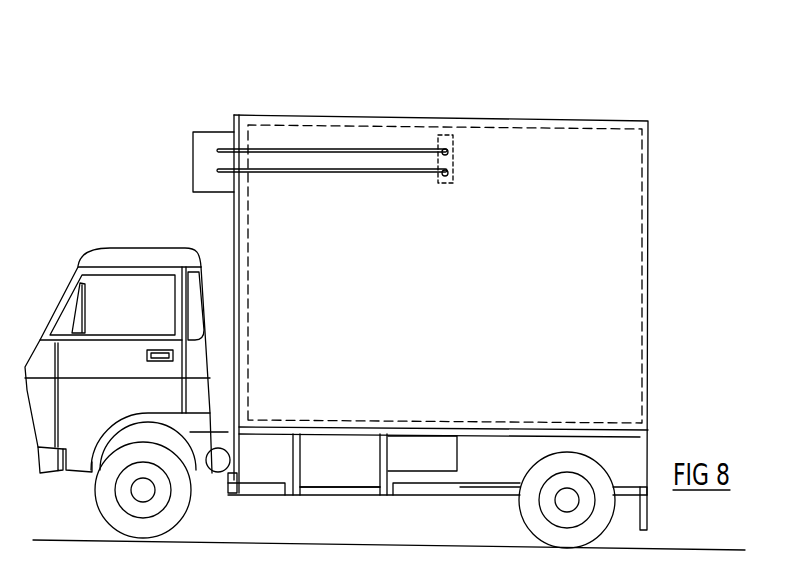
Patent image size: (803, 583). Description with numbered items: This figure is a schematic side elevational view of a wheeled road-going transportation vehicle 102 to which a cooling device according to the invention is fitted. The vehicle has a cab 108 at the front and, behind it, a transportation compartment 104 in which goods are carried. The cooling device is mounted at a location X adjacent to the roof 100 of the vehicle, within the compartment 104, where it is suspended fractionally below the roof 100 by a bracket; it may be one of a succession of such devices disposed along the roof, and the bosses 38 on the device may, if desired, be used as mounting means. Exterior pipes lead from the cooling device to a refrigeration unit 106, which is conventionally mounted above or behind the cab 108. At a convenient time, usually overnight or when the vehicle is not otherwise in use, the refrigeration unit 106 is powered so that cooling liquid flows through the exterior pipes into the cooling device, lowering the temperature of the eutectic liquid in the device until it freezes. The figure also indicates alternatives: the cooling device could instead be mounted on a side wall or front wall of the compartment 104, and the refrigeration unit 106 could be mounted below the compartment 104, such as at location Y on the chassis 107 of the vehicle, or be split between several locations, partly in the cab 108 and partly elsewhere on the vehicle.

The transportation vehicle 102 is at (433, 63).
The transportation compartment 104 is at (527, 157).
The refrigeration unit 106 is at (206, 137).
The chassis 107 is at (423, 428).
The vehicle cab 108 is at (138, 249).
The roof 100 is at (418, 130).
The bosses 38 is at (453, 150).
The mounting location X is at (481, 118).
The alternative refrigeration unit location Y is at (337, 473).